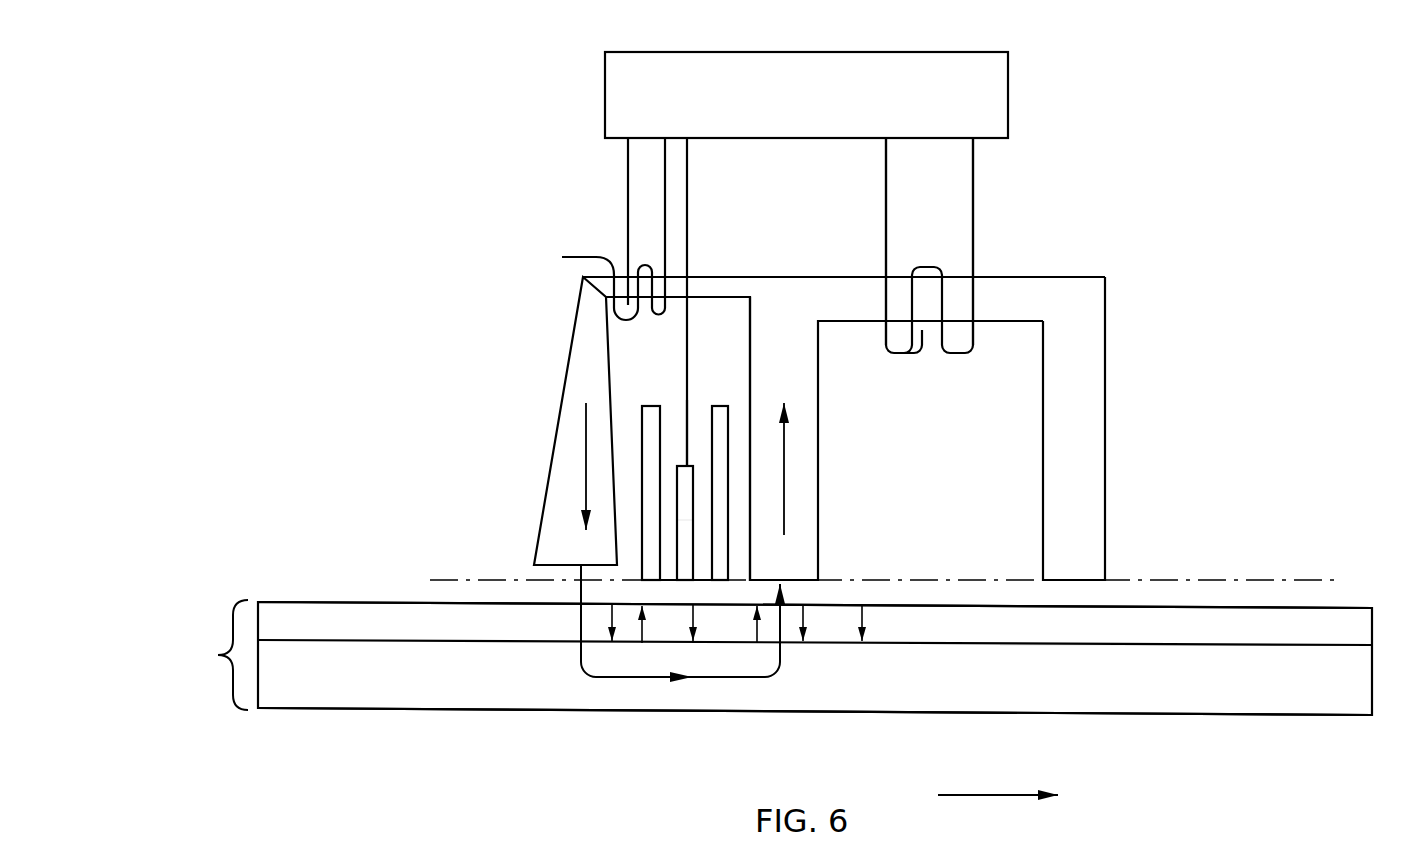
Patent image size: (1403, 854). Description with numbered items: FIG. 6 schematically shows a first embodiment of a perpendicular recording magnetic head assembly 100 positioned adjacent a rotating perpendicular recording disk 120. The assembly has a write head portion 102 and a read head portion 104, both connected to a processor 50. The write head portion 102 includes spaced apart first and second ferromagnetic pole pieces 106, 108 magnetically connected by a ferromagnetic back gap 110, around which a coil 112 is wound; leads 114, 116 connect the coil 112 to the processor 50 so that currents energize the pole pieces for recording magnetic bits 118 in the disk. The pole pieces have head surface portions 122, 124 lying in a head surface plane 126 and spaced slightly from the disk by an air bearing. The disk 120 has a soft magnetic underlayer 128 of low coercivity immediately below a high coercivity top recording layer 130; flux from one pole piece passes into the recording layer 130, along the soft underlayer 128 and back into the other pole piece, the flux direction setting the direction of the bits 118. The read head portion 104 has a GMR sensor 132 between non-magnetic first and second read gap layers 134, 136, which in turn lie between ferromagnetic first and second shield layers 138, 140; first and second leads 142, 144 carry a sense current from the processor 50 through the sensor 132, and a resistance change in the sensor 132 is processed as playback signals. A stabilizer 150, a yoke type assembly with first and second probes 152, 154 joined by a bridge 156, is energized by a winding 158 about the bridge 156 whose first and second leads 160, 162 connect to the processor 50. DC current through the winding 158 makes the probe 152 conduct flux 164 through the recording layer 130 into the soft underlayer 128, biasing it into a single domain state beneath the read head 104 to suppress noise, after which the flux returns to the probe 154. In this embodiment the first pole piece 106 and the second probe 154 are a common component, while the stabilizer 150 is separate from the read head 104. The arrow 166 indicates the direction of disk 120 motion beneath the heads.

The processor 50 is at (911, 107).
The perpendicular recording magnetic head assembly 100 is at (1094, 168).
The write head portion 102 is at (929, 268).
The read head portion 104 is at (708, 388).
The first ferromagnetic pole piece 106 is at (798, 537).
The second ferromagnetic pole piece 108 is at (1090, 420).
The ferromagnetic back gap 110 is at (1005, 297).
The coil 112 is at (917, 342).
The lead 114 is at (886, 195).
The lead 116 is at (973, 170).
The magnetic bits 118 is at (858, 618).
The perpendicular recording disk 120 is at (1214, 604).
The head surface portion 122 is at (763, 581).
The head surface portion 124 is at (1073, 583).
The head surface plane 126 is at (1297, 582).
The soft magnetic underlayer 128 is at (917, 695).
The top recording layer 130 is at (915, 620).
The sensor 132 is at (680, 487).
The first read gap layer 134 is at (667, 527).
The second read gap layer 136 is at (700, 546).
The first shield layer 138 is at (645, 418).
The second shield layer 140 is at (718, 448).
The first lead 142 is at (572, 302).
The second lead 144 is at (687, 347).
The stabilizer 150 is at (708, 272).
The first probe 152 is at (583, 368).
The second probe 154 is at (802, 447).
The bridge 156 is at (735, 290).
The winding 158 is at (595, 282).
The first lead 160 is at (628, 170).
The second lead 162 is at (665, 212).
The flux 164 is at (625, 677).
The arrow 166 is at (970, 795).